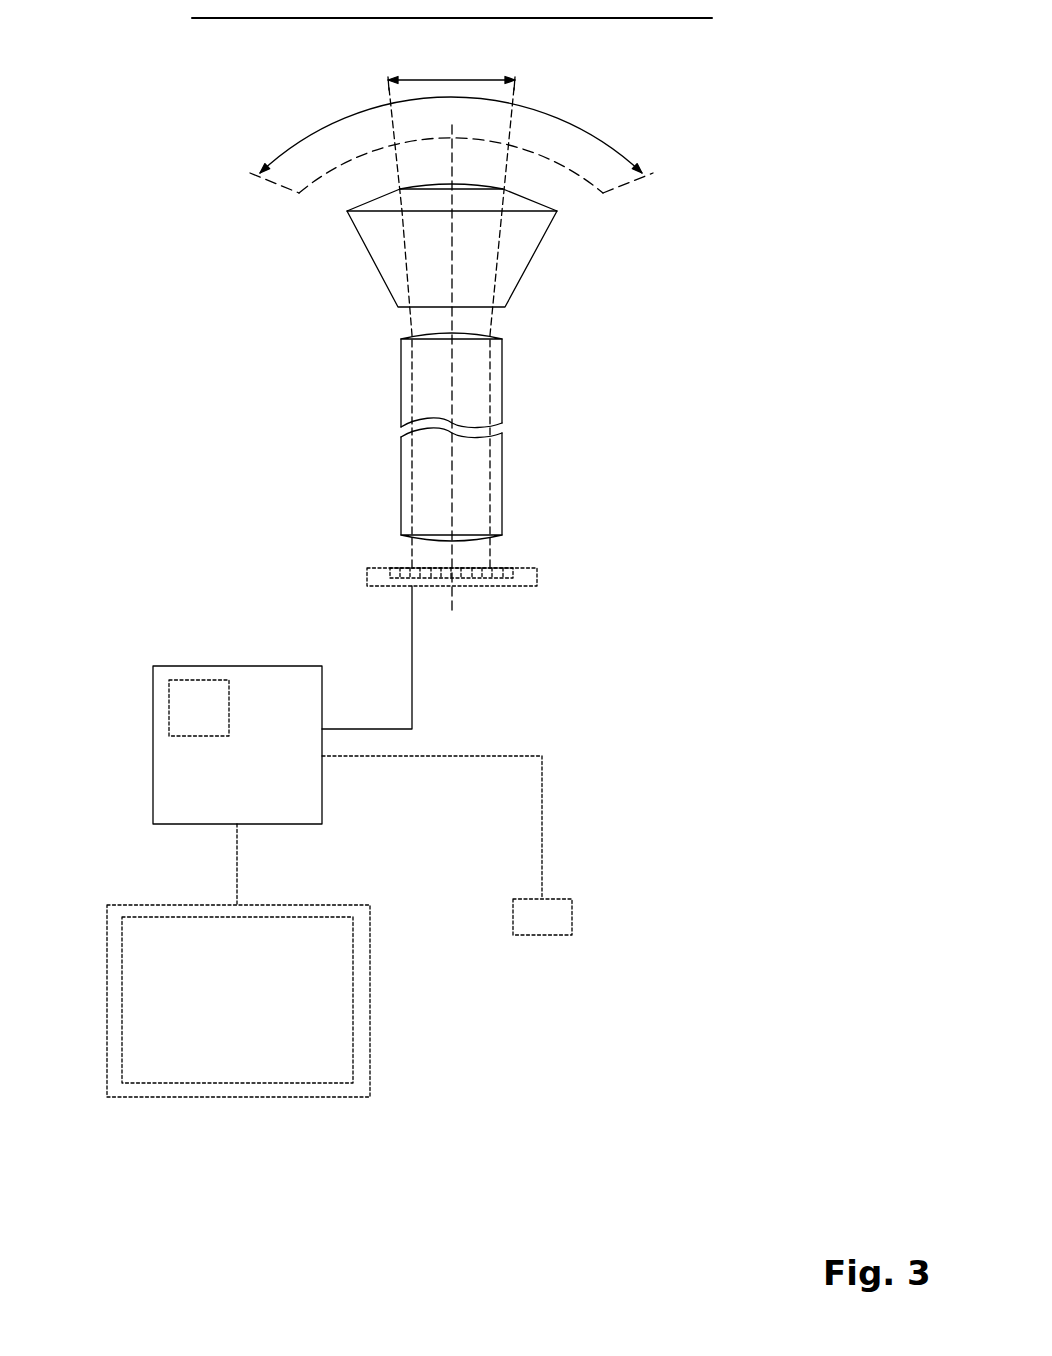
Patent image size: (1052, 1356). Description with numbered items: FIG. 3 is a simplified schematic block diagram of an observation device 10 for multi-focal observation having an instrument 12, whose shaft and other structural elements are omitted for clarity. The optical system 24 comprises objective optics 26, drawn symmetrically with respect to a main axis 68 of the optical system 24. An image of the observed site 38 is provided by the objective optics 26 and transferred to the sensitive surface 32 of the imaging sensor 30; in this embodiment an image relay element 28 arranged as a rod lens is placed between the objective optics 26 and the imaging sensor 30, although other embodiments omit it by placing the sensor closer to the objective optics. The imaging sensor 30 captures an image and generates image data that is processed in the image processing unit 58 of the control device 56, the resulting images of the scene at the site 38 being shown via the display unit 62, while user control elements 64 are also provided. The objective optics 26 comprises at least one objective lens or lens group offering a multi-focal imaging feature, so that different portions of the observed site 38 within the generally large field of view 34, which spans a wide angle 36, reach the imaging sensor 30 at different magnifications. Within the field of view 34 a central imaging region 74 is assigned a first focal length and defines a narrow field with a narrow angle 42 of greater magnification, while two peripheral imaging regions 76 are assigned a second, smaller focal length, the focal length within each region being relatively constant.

The observation device 10 is at (697, 1007).
The instrument 12 is at (205, 382).
The optical system 24 is at (607, 305).
The objective optics 26 is at (547, 247).
The image relay element 28 is at (502, 463).
The imaging sensor 30 is at (538, 582).
The sensitive surface 32 is at (400, 567).
The field of view 34 is at (628, 183).
The wide angle 36 is at (585, 120).
The observed site 38 is at (262, 19).
The narrow angle 42 is at (463, 79).
The control device 56 is at (138, 703).
The image processing unit 58 is at (167, 725).
The display unit 62 is at (373, 1040).
The user control elements 64 is at (573, 914).
The main axis 68 is at (452, 263).
The central imaging region 74 is at (437, 167).
The peripheral imaging regions 76 is at (340, 185).